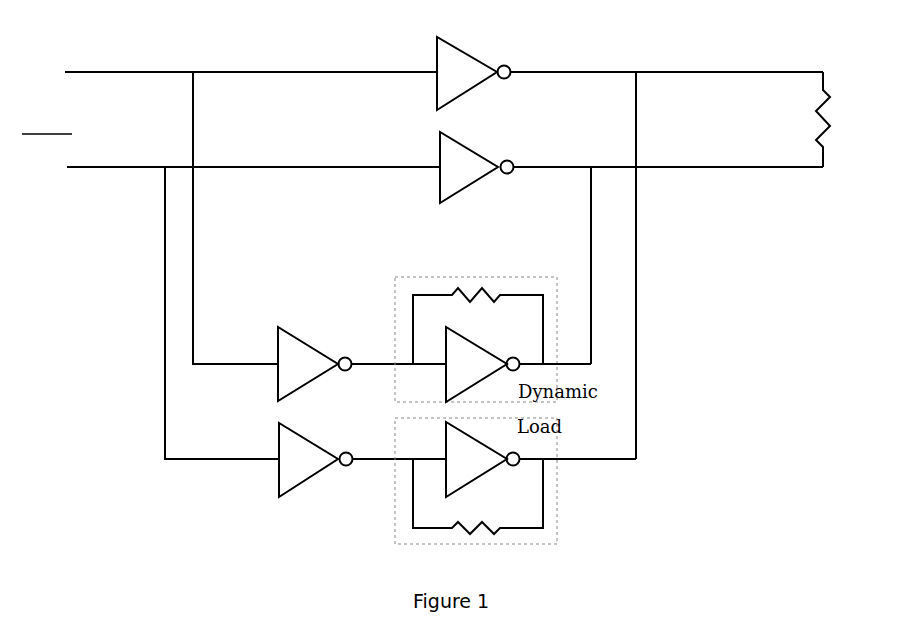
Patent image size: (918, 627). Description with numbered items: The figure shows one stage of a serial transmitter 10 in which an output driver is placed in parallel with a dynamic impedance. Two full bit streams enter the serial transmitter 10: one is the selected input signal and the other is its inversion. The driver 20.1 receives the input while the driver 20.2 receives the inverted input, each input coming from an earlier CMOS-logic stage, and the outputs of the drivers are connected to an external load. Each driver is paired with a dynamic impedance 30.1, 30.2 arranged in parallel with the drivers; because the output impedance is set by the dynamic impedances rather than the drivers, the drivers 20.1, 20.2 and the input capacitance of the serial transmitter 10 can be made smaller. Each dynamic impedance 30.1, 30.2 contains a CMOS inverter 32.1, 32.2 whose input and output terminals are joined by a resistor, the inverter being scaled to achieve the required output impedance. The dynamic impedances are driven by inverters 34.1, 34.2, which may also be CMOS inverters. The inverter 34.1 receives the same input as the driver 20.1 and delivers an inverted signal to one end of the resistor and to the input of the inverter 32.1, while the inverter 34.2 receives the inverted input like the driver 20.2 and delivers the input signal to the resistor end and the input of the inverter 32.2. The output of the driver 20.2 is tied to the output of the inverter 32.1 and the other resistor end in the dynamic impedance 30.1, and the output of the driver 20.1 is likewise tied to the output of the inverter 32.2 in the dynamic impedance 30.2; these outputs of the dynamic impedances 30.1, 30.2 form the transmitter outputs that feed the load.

The serial transmitter 10 is at (453, 251).
The driver 20.1 is at (474, 73).
The driver 20.2 is at (477, 167).
The dynamic impedance 30.1 is at (478, 326).
The dynamic impedance 30.2 is at (478, 496).
The inverter 32.1 is at (518, 364).
The inverter 32.2 is at (541, 459).
The inverter 34.1 is at (362, 364).
The inverter 34.2 is at (362, 460).